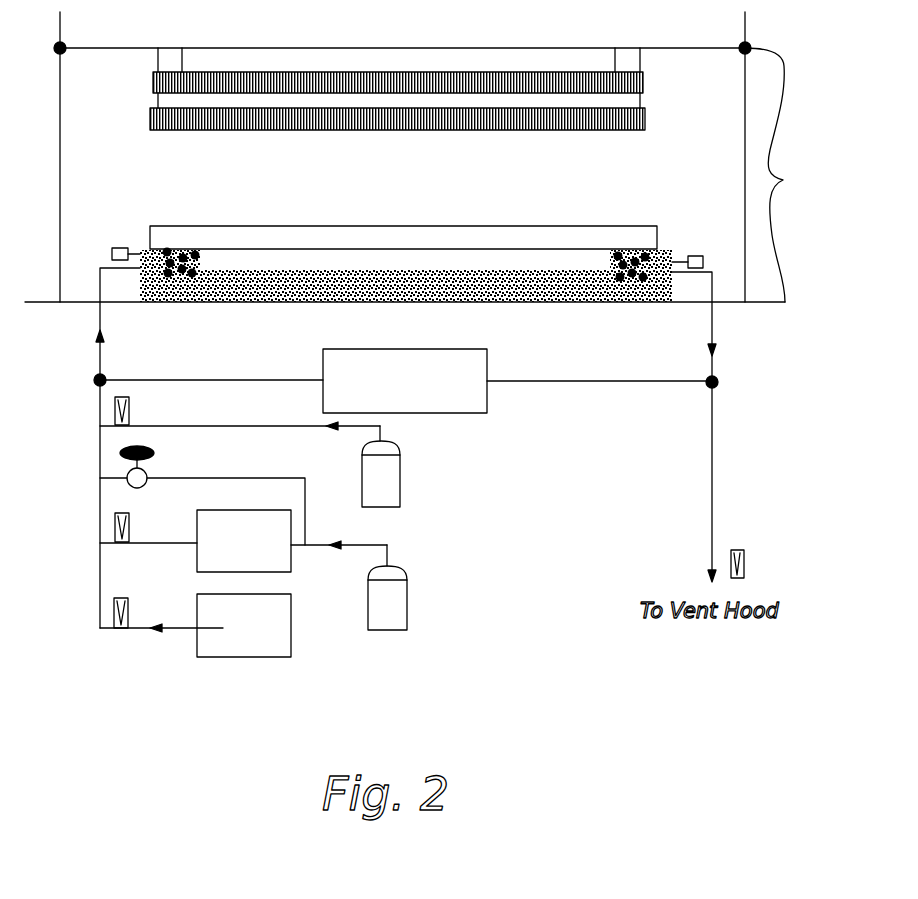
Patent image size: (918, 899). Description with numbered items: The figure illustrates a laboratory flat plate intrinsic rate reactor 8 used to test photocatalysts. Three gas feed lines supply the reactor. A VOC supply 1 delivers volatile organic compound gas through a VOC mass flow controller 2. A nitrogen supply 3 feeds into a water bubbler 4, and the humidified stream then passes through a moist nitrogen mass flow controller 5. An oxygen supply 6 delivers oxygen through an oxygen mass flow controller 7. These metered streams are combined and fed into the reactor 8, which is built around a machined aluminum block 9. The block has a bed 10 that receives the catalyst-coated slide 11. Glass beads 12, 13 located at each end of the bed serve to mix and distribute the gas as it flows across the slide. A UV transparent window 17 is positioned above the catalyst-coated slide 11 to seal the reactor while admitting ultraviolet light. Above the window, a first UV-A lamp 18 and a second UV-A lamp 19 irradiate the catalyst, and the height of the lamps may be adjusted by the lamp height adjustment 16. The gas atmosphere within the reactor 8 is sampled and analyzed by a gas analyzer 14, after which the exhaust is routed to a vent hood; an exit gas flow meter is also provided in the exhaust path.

The VOC supply 1 is at (291, 636).
The VOC mass flow controller 2 is at (114, 606).
The nitrogen supply 3 is at (393, 600).
The water bubbler 4 is at (291, 560).
The moist nitrogen mass flow controller 5 is at (115, 520).
The oxygen supply 6 is at (393, 482).
The oxygen mass flow controller 7 is at (115, 400).
The laboratory flat plate intrinsic rate reactor 8 is at (140, 283).
The machined aluminum block 9 is at (298, 302).
The bed 10 is at (380, 272).
The catalyst-coated slide 11 is at (318, 266).
The glass beads 12 is at (183, 284).
The glass beads 13 is at (633, 300).
The gas analyzer 14 is at (487, 400).
The lamp height adjustment 16 is at (781, 175).
The UV transparent window 17 is at (456, 226).
The first UV-A lamp 18 is at (512, 82).
The second UV-A lamp 19 is at (570, 120).